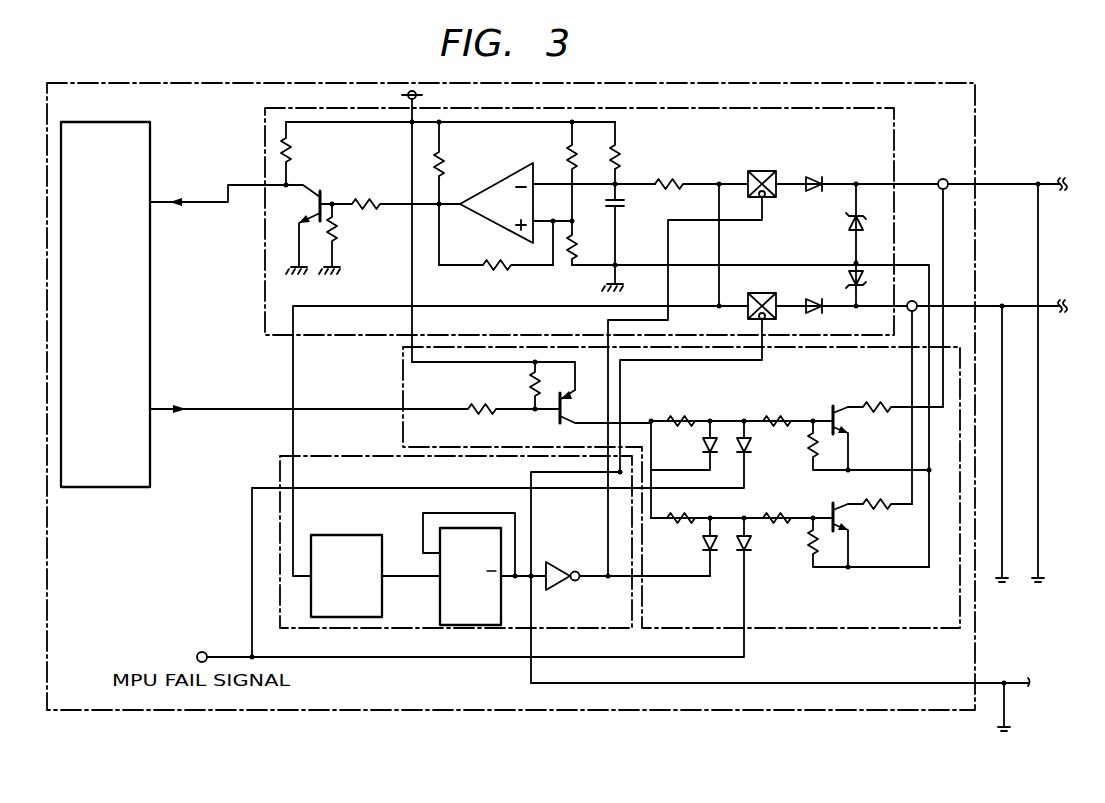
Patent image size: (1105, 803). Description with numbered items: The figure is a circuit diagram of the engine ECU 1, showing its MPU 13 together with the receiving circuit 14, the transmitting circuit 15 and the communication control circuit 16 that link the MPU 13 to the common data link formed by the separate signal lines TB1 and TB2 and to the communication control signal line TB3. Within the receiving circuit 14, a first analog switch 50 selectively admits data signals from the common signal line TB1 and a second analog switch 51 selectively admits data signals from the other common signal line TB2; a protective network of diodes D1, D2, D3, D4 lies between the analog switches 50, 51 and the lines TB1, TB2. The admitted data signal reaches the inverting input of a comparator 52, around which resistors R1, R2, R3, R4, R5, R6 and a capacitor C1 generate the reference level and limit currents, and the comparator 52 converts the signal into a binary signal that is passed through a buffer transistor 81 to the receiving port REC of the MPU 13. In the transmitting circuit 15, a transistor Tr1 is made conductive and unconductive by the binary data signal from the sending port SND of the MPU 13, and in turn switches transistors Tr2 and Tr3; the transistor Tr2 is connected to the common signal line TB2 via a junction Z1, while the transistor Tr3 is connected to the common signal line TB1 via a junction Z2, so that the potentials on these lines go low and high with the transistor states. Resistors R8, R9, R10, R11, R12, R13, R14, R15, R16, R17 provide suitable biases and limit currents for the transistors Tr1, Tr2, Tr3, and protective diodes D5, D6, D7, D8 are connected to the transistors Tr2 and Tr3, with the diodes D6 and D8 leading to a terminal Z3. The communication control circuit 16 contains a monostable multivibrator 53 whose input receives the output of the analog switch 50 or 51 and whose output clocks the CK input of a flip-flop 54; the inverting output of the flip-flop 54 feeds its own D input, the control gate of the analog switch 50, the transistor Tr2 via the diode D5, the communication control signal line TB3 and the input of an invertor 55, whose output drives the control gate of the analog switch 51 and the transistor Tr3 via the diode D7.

The engine ECU 1 is at (867, 83).
The MPU 13 is at (105, 488).
The receiving circuit 14 is at (265, 228).
The transmitting circuit 15 is at (403, 380).
The communication control circuit 16 is at (280, 470).
The first analog switch 50 is at (758, 294).
The second analog switch 51 is at (761, 170).
The comparator 52 is at (508, 181).
The monostable multivibrator 53 is at (344, 535).
The flip-flop 54 is at (438, 601).
The invertor 55 is at (565, 564).
The transistor 81 is at (322, 192).
The resistor R1 is at (701, 169).
The resistor R2 is at (629, 153).
The resistor R3 is at (586, 171).
The resistor R4 is at (586, 243).
The resistor R5 is at (496, 277).
The resistor R6 is at (452, 193).
The resistor R8 is at (521, 387).
The resistor R9 is at (355, 399).
The resistor R10 is at (741, 411).
The resistor R11 is at (775, 411).
The resistor R12 is at (852, 445).
The resistor R13 is at (895, 397).
The resistor R14 is at (742, 510).
The resistor R15 is at (778, 509).
The resistor R16 is at (852, 542).
The resistor R17 is at (880, 494).
The capacitor C1 is at (629, 225).
The diode D1 is at (814, 175).
The diode D2 is at (847, 224).
The diode D3 is at (869, 284).
The diode D4 is at (816, 302).
The diode D5 is at (698, 449).
The diode D6 is at (752, 447).
The diode D7 is at (698, 547).
The diode D8 is at (752, 546).
The transistor Tr1 is at (566, 406).
The transistor Tr2 is at (849, 424).
The transistor Tr3 is at (851, 521).
The junction Z1 is at (943, 179).
The junction Z2 is at (913, 301).
The terminal Z3 is at (201, 652).
The common signal line TB1 is at (1005, 515).
The common signal line TB2 is at (1040, 507).
The communication control signal line TB3 is at (1008, 705).